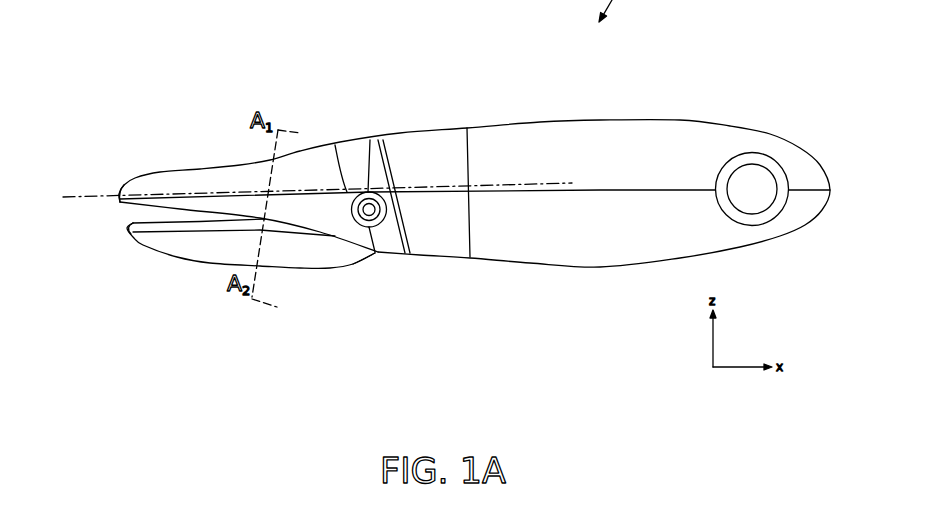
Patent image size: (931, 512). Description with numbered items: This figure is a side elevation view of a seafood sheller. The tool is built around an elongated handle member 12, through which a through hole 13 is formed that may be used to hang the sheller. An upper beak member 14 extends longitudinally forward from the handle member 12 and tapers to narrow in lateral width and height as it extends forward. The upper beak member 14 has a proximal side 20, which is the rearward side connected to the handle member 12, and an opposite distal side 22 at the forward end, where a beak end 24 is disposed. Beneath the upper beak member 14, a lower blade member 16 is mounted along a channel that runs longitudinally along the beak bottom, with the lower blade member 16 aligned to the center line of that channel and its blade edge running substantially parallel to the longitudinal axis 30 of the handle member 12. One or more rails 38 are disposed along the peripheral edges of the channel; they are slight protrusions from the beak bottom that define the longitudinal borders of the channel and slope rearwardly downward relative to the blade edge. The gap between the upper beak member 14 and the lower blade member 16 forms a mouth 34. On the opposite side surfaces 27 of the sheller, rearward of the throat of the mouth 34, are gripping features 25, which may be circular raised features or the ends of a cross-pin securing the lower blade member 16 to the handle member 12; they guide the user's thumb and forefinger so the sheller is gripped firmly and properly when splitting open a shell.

The handle member 12 is at (717, 133).
The through hole 13 is at (765, 177).
The upper beak member 14 is at (329, 162).
The lower blade member 16 is at (303, 242).
The proximal side 20 is at (370, 121).
The distal side 22 is at (96, 163).
The beak end 24 is at (164, 188).
The gripping features 25 is at (378, 254).
The side surfaces 27 is at (342, 214).
The longitudinal axis 30 is at (540, 191).
The mouth 34 is at (103, 227).
The rail 38 is at (212, 209).